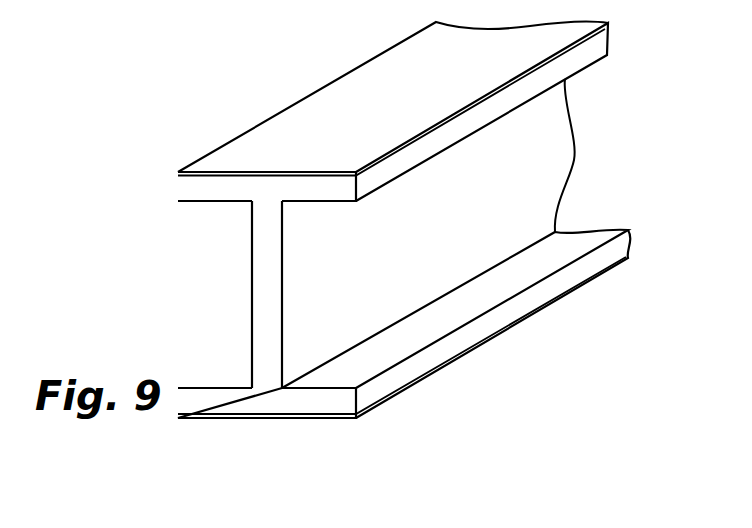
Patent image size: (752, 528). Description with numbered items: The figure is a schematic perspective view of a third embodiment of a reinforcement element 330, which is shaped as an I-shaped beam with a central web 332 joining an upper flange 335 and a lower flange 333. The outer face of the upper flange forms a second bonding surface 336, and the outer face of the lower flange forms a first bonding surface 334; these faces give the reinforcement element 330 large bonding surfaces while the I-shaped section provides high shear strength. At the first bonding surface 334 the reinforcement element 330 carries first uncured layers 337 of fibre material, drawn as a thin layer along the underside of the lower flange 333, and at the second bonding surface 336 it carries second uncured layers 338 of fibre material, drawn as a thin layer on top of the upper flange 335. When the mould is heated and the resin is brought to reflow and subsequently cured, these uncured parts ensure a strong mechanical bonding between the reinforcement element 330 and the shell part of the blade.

The reinforcement element 330 is at (128, 290).
The web 332 is at (547, 208).
The bottom flange 333 is at (262, 400).
The first bonding surface 334 is at (195, 418).
The top flange 335 is at (202, 189).
The second bonding surface 336 is at (300, 127).
The first uncured layers 337 is at (323, 415).
The second uncured layers 338 is at (180, 173).